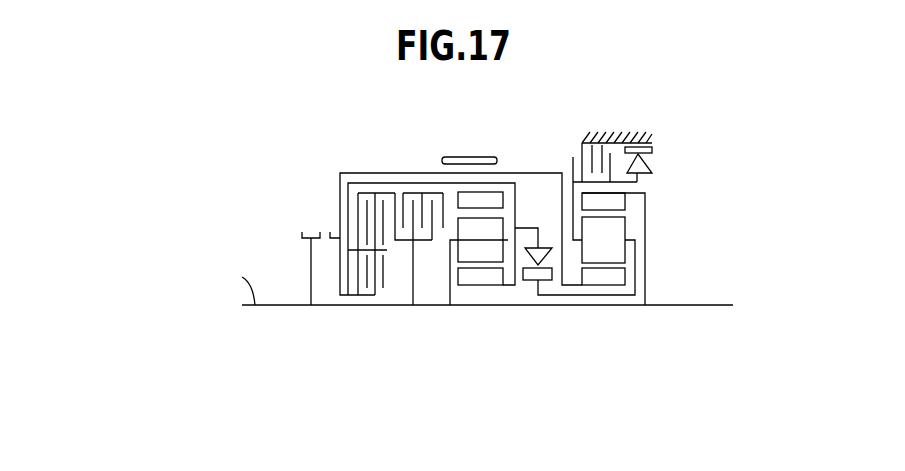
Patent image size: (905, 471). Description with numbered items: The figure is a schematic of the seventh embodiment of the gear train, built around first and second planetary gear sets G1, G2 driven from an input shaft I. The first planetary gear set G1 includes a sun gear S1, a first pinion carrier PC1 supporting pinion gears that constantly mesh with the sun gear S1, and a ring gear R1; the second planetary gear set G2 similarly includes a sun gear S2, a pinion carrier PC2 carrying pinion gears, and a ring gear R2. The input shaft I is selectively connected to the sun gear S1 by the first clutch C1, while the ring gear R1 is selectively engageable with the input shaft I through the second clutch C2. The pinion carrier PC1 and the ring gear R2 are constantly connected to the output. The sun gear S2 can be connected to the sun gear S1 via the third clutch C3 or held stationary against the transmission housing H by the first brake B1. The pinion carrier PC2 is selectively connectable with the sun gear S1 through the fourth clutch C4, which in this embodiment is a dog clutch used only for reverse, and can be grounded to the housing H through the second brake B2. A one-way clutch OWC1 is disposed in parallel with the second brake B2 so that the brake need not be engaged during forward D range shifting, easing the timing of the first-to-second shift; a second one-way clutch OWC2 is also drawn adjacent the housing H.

The input shaft I is at (478, 285).
The first clutch C1 is at (367, 191).
The second clutch C2 is at (411, 191).
The third clutch C3 is at (347, 298).
The fourth clutch C4 is at (309, 229).
The first brake B1 is at (463, 156).
The second brake B2 is at (571, 150).
The transmission housing H is at (599, 132).
The one-way clutch OWC1 is at (536, 279).
The second one-way clutch OWC2 is at (653, 158).
The first planetary gear set G1 is at (445, 296).
The second planetary gear set G2 is at (694, 249).
The ring gear R1 is at (490, 204).
The ring gear R2 is at (625, 204).
The first pinion carrier PC1 is at (470, 238).
The pinion carrier PC2 is at (626, 241).
The sun gear S1 is at (482, 279).
The sun gear S2 is at (625, 275).